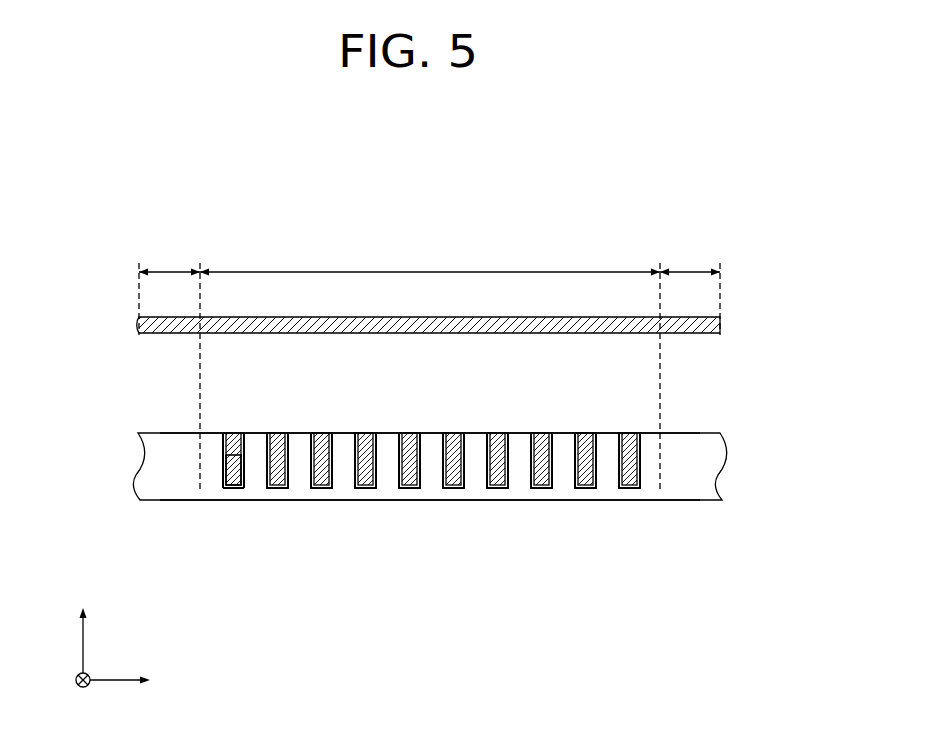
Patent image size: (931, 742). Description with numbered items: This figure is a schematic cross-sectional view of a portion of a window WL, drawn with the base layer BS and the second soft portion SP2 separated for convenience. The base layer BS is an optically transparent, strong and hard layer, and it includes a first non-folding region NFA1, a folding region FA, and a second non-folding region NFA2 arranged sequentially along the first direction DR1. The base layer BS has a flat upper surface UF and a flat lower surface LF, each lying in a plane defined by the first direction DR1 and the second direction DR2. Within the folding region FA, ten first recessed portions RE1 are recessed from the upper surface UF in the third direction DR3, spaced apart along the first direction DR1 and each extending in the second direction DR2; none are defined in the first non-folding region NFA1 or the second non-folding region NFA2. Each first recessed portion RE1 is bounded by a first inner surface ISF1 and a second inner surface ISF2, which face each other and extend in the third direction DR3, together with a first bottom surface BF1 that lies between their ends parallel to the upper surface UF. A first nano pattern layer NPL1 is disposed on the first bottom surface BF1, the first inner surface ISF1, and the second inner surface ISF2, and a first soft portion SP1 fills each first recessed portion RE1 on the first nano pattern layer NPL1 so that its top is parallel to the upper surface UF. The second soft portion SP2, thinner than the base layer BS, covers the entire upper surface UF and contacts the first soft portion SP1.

The window WL is at (630, 203).
The first non-folding region NFA1 is at (169, 366).
The folding region FA is at (430, 257).
The second non-folding region NFA2 is at (690, 366).
The second soft portion SP2 is at (720, 322).
The upper surface UF is at (160, 433).
The lower surface LF is at (160, 500).
The base layer BS is at (712, 465).
The first inner surface ISF1 is at (229, 486).
The second inner surface ISF2 is at (243, 486).
The first bottom surface BF1 is at (230, 489).
The first recessed portion RE1 is at (362, 484).
The first soft portion SP1 is at (452, 484).
The first nano pattern layer NPL1 is at (541, 484).
The first direction DR1 is at (138, 680).
The second direction DR2 is at (82, 695).
The third direction DR3 is at (82, 627).